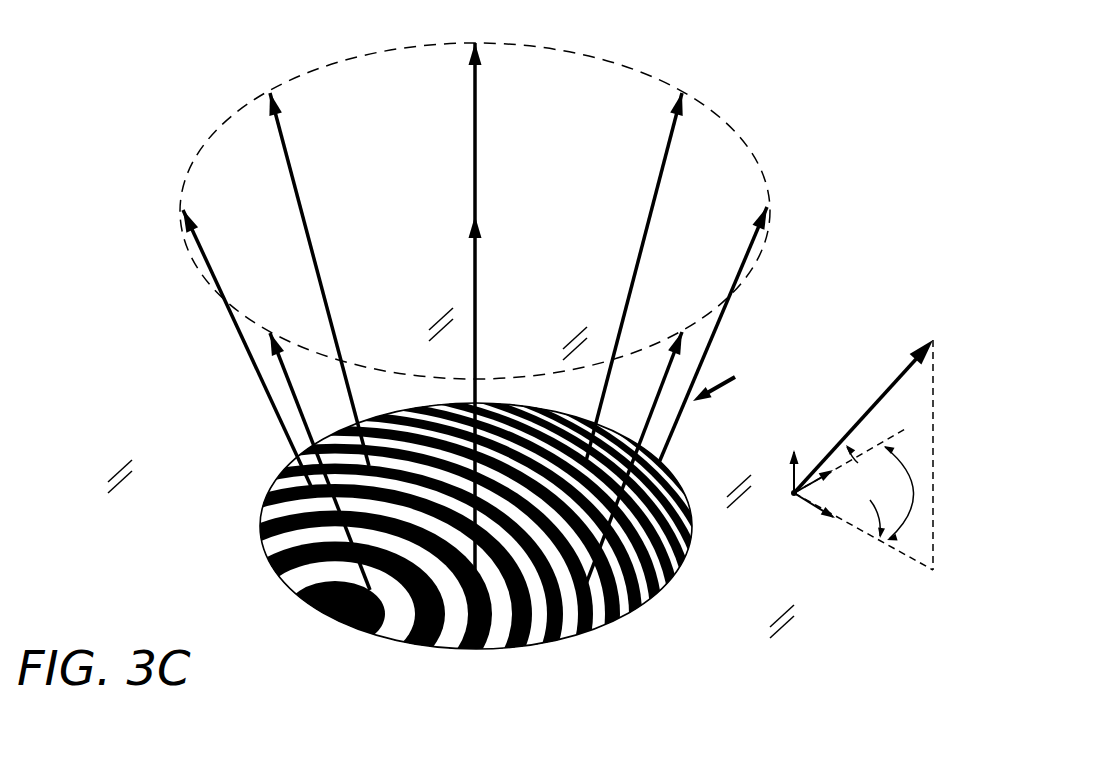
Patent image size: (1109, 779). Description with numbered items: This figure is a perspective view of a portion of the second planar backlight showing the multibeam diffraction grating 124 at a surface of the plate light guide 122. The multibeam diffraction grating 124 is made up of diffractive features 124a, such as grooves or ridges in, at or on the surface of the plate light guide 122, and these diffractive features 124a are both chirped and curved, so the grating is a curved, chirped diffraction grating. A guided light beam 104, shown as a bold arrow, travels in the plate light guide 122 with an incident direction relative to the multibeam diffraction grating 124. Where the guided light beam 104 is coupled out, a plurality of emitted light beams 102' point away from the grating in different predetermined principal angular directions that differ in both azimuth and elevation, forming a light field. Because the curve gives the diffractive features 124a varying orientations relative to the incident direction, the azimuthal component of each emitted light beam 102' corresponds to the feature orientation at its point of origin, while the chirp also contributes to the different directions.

The emitted light beam 102' is at (507, 317).
The guided light beam 104 is at (718, 395).
The plate light guide 122 is at (781, 588).
The multibeam diffraction grating 124 is at (255, 464).
The diffractive features 124a is at (622, 612).